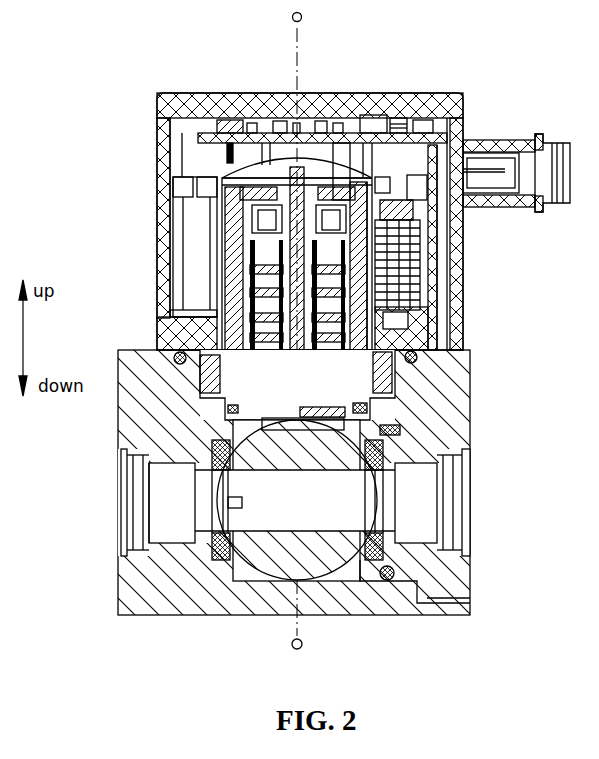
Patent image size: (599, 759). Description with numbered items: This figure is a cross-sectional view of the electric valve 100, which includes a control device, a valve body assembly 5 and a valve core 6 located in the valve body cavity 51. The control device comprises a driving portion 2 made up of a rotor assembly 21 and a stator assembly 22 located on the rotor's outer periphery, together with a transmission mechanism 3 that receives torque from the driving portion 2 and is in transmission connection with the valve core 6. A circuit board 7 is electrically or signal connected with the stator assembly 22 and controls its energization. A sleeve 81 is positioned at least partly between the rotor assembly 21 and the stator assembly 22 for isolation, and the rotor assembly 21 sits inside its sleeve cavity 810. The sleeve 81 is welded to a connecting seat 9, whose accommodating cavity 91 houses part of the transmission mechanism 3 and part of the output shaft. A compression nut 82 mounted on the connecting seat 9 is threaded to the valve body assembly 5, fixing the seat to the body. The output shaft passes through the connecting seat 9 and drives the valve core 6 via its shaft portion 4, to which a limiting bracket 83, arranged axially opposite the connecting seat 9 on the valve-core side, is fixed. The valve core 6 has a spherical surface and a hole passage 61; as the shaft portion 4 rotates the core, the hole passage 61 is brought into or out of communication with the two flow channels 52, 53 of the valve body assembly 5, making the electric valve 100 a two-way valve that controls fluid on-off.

The electric valve 100 is at (532, 50).
The sleeve cavity 810 is at (207, 95).
The circuit board 7 is at (310, 138).
The sleeve 81 is at (290, 158).
The transmission mechanism 3 is at (227, 268).
The stator assembly 22 is at (195, 235).
The driving portion 2 is at (395, 245).
The rotor assembly 21 is at (405, 208).
The valve body assembly 5 is at (135, 395).
The compression nut 82 is at (165, 325).
The accommodating cavity 91 is at (393, 368).
The connecting seat 9 is at (160, 355).
The limiting bracket 83 is at (310, 428).
The shaft portion 4 is at (382, 432).
The valve body cavity 51 is at (245, 432).
The valve core 6 is at (300, 580).
The flow channel 52 is at (173, 498).
The flow channel 53 is at (413, 502).
The hole passage 61 is at (388, 583).